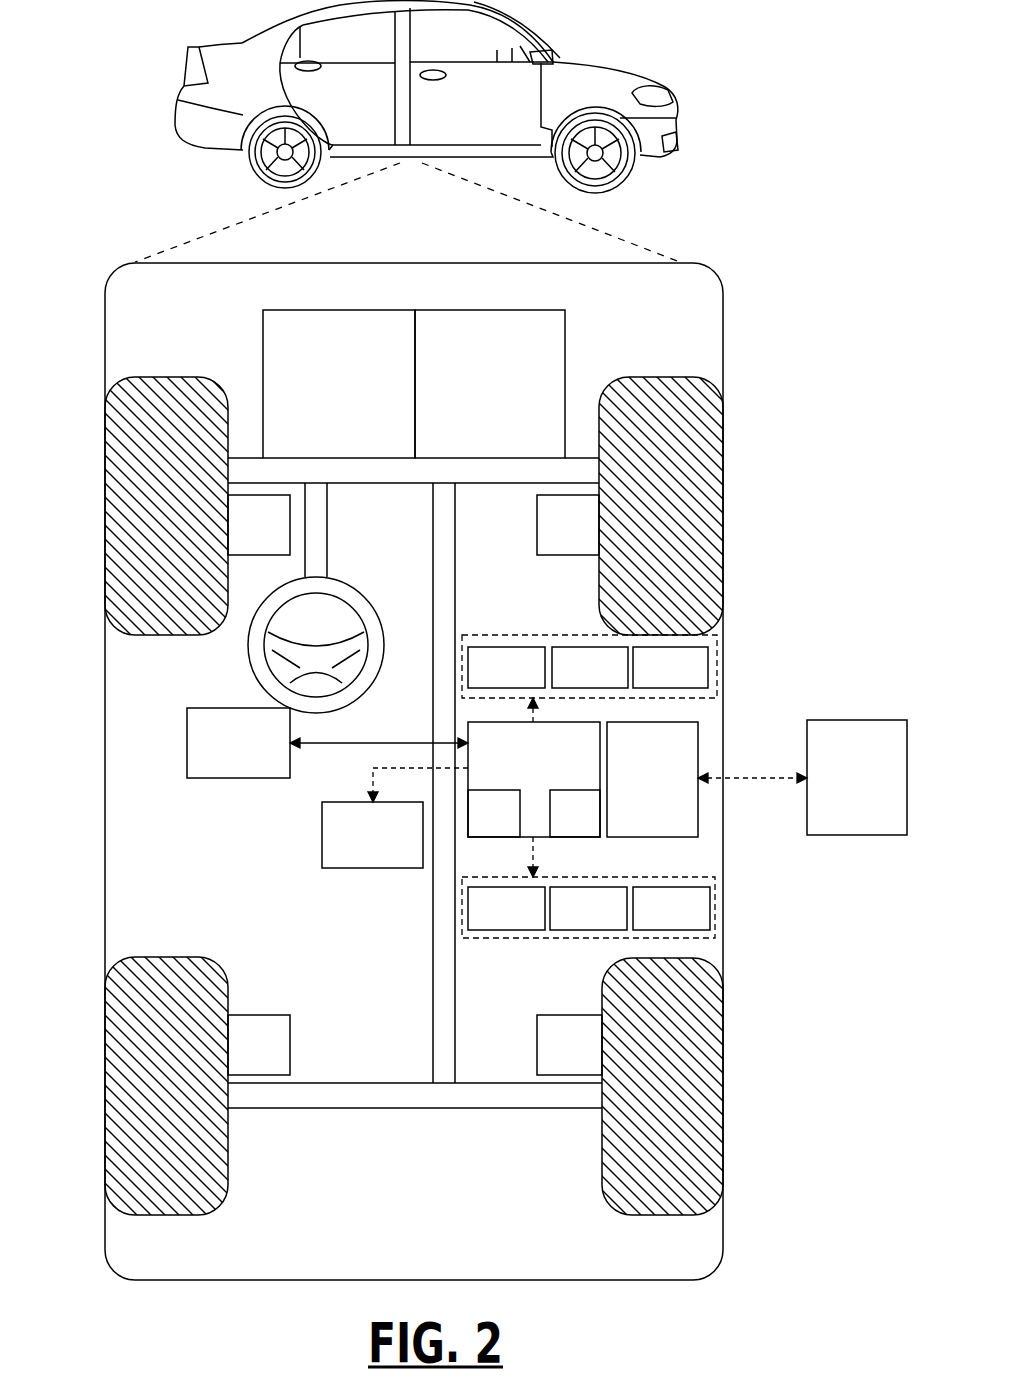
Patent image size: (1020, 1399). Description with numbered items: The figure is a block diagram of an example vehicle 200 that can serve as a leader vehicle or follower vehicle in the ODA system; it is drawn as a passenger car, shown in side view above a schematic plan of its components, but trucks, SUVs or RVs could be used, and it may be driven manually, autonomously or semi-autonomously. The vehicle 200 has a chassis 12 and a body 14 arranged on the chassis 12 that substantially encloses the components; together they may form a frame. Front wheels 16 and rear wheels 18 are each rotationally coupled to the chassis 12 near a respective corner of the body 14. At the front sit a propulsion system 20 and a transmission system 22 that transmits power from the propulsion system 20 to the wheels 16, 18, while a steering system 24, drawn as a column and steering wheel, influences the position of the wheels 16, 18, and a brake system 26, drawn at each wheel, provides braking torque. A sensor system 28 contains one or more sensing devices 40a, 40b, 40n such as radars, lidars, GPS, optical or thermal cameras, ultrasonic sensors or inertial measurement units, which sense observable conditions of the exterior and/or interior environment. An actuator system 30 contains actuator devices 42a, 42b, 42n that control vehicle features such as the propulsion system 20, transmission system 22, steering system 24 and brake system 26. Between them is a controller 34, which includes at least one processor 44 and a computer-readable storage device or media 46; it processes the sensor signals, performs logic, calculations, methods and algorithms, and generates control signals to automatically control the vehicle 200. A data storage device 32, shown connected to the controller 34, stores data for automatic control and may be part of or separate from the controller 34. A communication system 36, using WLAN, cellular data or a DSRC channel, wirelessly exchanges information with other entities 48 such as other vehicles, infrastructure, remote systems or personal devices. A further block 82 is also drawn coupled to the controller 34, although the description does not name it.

The vehicle 200 is at (160, 84).
The body 14 is at (105, 733).
The front wheels 16 is at (166, 377).
The rear wheels 18 is at (165, 1215).
The propulsion system 20 is at (323, 399).
The transmission system 22 is at (473, 399).
The brake system 26 is at (244, 539).
The steering system 24 is at (335, 554).
The chassis 12 is at (433, 922).
The vehicle module 82 is at (223, 759).
The data storage device 32 is at (357, 851).
The sensor system 28 is at (589, 650).
The sensing device 40a is at (484, 684).
The sensing device 40b is at (568, 684).
The sensing device 40n is at (648, 684).
The actuator system 30 is at (588, 926).
The actuator device 42a is at (484, 924).
The actuator device 42b is at (567, 924).
The actuator device 42n is at (649, 924).
The controller 34 is at (534, 787).
The processor 44 is at (479, 830).
The computer-readable storage device or media 46 is at (560, 830).
The communication system 36 is at (637, 796).
The other entities 48 is at (842, 796).